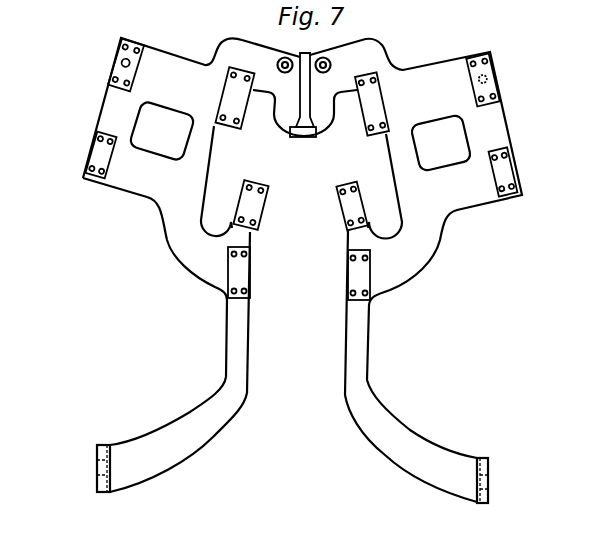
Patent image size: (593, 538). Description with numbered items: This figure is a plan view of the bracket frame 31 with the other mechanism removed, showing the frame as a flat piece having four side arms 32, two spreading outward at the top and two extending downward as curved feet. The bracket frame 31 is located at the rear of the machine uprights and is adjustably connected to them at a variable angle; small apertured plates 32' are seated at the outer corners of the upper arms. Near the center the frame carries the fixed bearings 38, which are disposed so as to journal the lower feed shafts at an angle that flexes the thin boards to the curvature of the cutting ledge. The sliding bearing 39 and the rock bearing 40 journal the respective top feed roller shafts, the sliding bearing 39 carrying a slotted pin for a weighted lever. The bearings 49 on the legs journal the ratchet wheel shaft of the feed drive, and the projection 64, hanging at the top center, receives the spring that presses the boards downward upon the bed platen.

The bracket frame 31 is at (428, 282).
The side arms 32 is at (292, 440).
The end clamp plate 32' is at (299, 164).
The fixed bearings 38 is at (347, 200).
The sliding bearing 39 is at (243, 117).
The rock bearing 40 is at (143, 57).
The bearings 49 is at (356, 272).
The projection 64 is at (301, 138).